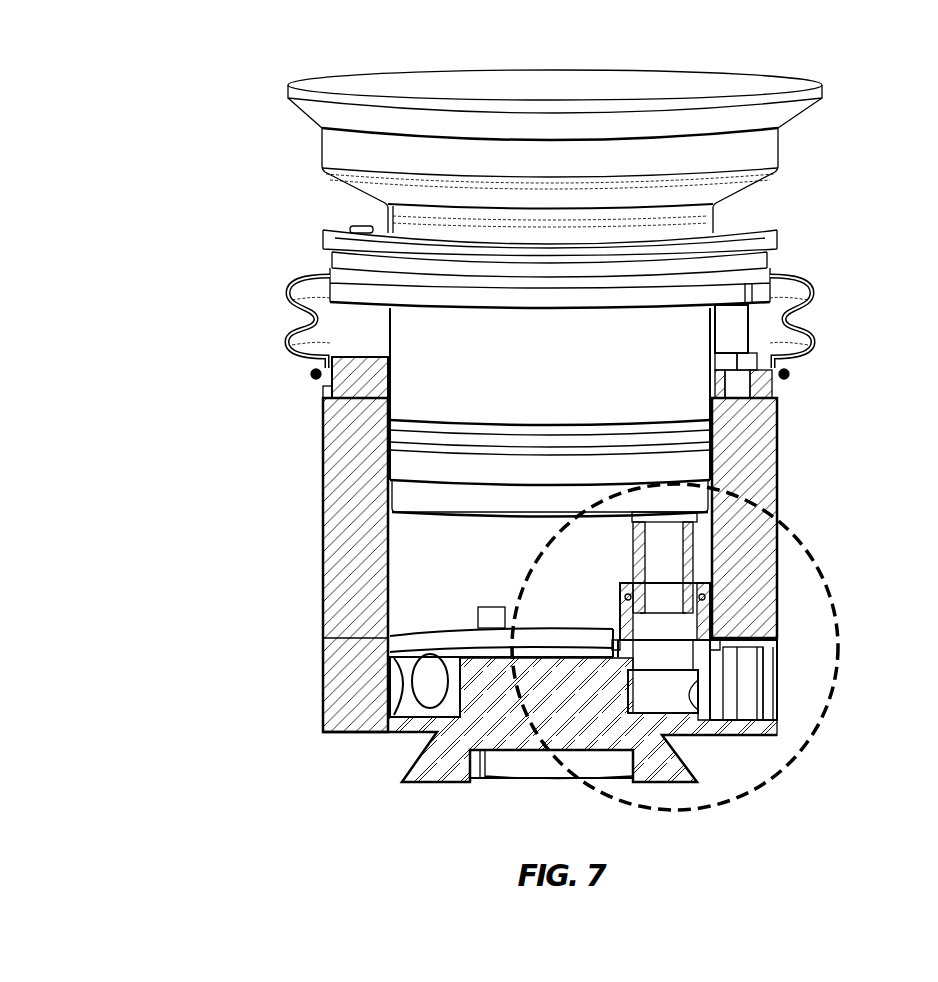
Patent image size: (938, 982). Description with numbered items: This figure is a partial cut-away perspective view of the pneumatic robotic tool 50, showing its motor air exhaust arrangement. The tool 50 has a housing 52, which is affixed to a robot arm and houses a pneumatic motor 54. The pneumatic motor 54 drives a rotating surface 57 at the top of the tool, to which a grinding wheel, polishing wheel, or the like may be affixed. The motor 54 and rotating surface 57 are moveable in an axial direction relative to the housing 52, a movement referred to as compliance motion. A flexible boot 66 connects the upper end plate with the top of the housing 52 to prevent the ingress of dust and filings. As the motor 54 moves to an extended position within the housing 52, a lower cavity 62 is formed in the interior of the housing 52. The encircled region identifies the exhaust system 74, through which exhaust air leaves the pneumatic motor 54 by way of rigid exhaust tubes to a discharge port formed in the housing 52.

The pneumatic robotic tool 50 is at (241, 163).
The rotating surface 57 is at (680, 88).
The pneumatic motor 54 is at (422, 372).
The flexible boot 66 is at (293, 290).
The housing 52 is at (345, 475).
The lower cavity 62 is at (437, 555).
The exhaust system 74 is at (822, 575).